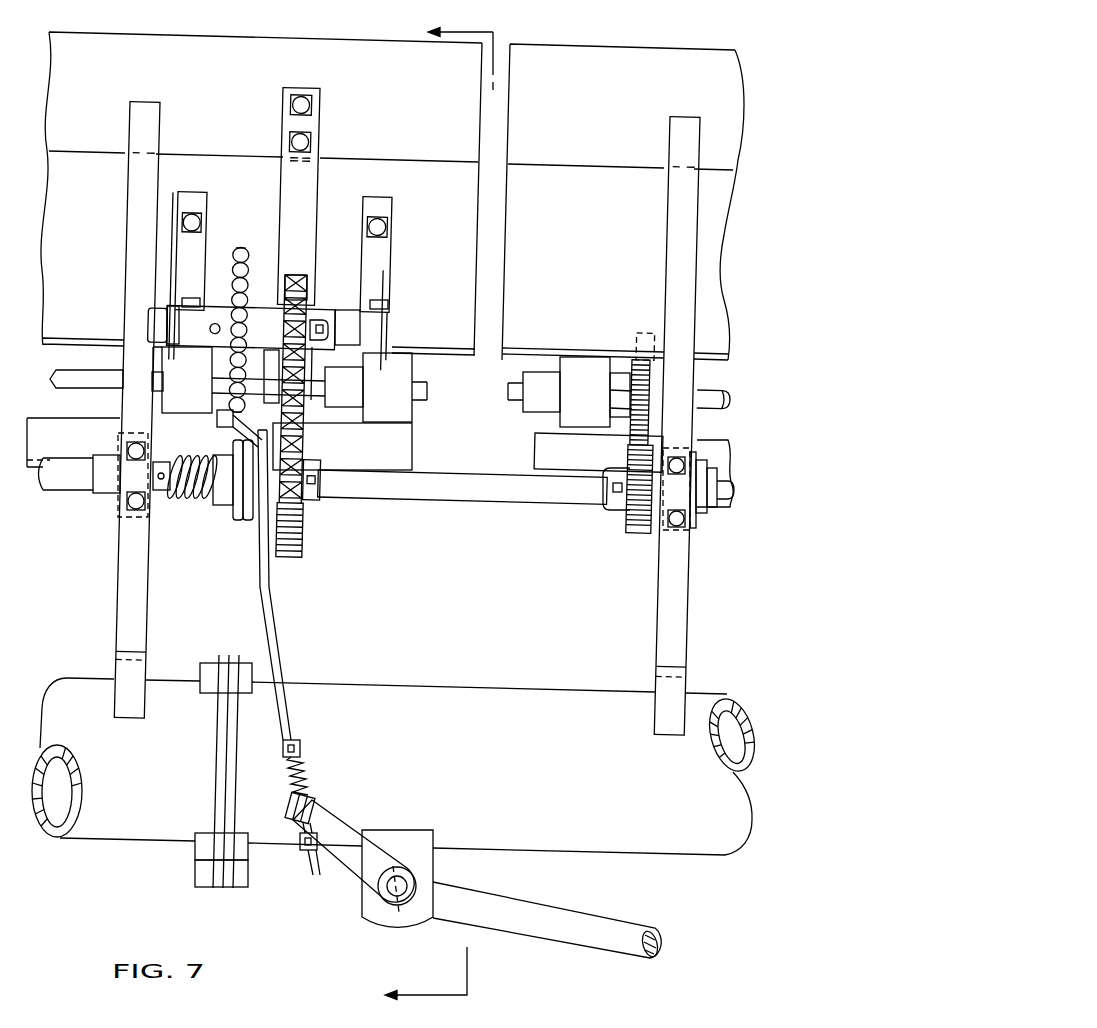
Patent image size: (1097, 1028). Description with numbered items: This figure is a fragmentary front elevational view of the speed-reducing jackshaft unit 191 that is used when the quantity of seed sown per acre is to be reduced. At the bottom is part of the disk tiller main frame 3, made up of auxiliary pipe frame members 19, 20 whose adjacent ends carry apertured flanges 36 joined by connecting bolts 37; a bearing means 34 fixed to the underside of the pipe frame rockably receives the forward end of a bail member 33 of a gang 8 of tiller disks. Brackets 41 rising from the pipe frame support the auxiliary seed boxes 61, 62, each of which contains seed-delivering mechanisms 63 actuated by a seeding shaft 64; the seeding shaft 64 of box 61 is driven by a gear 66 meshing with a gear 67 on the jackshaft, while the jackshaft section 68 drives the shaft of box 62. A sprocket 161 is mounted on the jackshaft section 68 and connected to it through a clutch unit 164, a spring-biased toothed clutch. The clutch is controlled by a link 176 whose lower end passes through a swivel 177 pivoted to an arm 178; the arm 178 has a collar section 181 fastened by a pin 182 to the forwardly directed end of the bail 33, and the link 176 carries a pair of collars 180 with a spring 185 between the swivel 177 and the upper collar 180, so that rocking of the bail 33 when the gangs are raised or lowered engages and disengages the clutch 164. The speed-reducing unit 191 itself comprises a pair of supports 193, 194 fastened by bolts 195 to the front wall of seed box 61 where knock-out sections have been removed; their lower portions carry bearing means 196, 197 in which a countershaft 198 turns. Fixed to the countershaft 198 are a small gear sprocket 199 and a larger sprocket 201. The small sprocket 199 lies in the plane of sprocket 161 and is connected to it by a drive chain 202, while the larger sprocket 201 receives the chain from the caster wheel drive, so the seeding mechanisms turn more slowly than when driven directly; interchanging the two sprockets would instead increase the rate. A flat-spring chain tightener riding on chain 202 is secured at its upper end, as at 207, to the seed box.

The main frame 3 is at (411, 686).
The gang of tiller disks 8 is at (432, 508).
The auxiliary pipe frame member 19 is at (97, 836).
The auxiliary pipe frame member 20 is at (502, 704).
The bail member 33 is at (582, 937).
The bearing means 34 is at (413, 838).
The flange 36 is at (230, 759).
The connecting bolt 37 is at (210, 670).
The bracket 41 is at (122, 213).
The auxiliary seed box 61 is at (258, 34).
The auxiliary seed box 62 is at (742, 162).
The seed-delivering mechanism 63 is at (402, 418).
The seeding shaft 64 is at (722, 405).
The gear 66 is at (639, 370).
The gear 67 is at (642, 526).
The auxiliary jackshaft section 68 is at (493, 502).
The sprocket 161 is at (304, 519).
The clutch unit 164 is at (232, 508).
The controlling link 176 is at (268, 628).
The swivel 177 is at (312, 806).
The arm 178 is at (349, 829).
The collar 180 is at (300, 747).
The collar section 181 is at (410, 878).
The pin 182 is at (383, 890).
The spring 185 is at (287, 776).
The speed-reducing unit 191 is at (352, 185).
The support 193 is at (386, 256).
The support 194 is at (199, 200).
The bolt 195 is at (376, 220).
The bearing means 196 is at (380, 327).
The bearing means 197 is at (183, 313).
The countershaft 198 is at (148, 327).
The small gear sprocket 199 is at (305, 300).
The larger sprocket 201 is at (245, 250).
The drive chain 202 is at (308, 450).
The securing point of chain tightener 207 is at (310, 138).